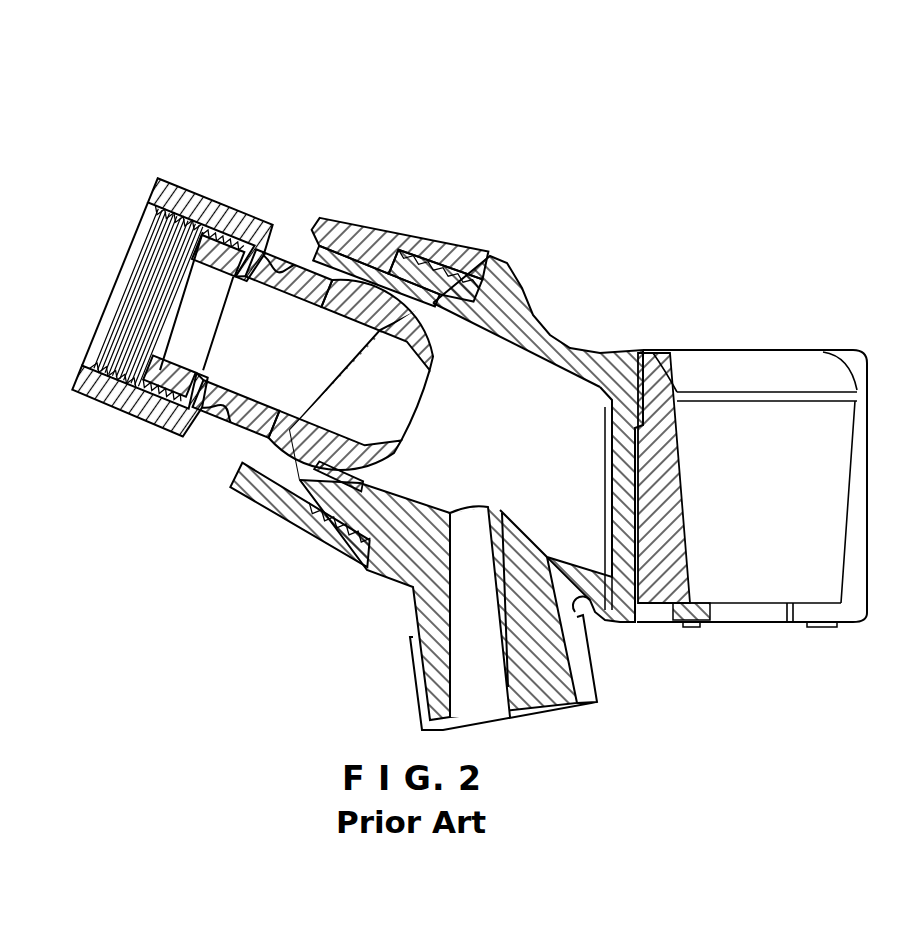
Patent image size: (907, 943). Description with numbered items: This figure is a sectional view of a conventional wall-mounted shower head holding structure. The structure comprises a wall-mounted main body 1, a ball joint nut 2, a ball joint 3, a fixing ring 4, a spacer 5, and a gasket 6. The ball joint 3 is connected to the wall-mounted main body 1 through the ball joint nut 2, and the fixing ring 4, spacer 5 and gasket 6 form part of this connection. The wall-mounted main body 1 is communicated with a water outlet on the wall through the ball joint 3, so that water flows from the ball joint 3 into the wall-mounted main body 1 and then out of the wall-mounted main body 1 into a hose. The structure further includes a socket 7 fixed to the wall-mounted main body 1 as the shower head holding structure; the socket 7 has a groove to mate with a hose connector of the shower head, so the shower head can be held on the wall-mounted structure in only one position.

The wall-mounted main body 1 is at (603, 370).
The ball joint nut 2 is at (463, 247).
The ball joint 3 is at (264, 253).
The fixing ring 4 is at (345, 215).
The spacer 5 is at (222, 253).
The gasket 6 is at (433, 303).
The socket 7 is at (772, 367).